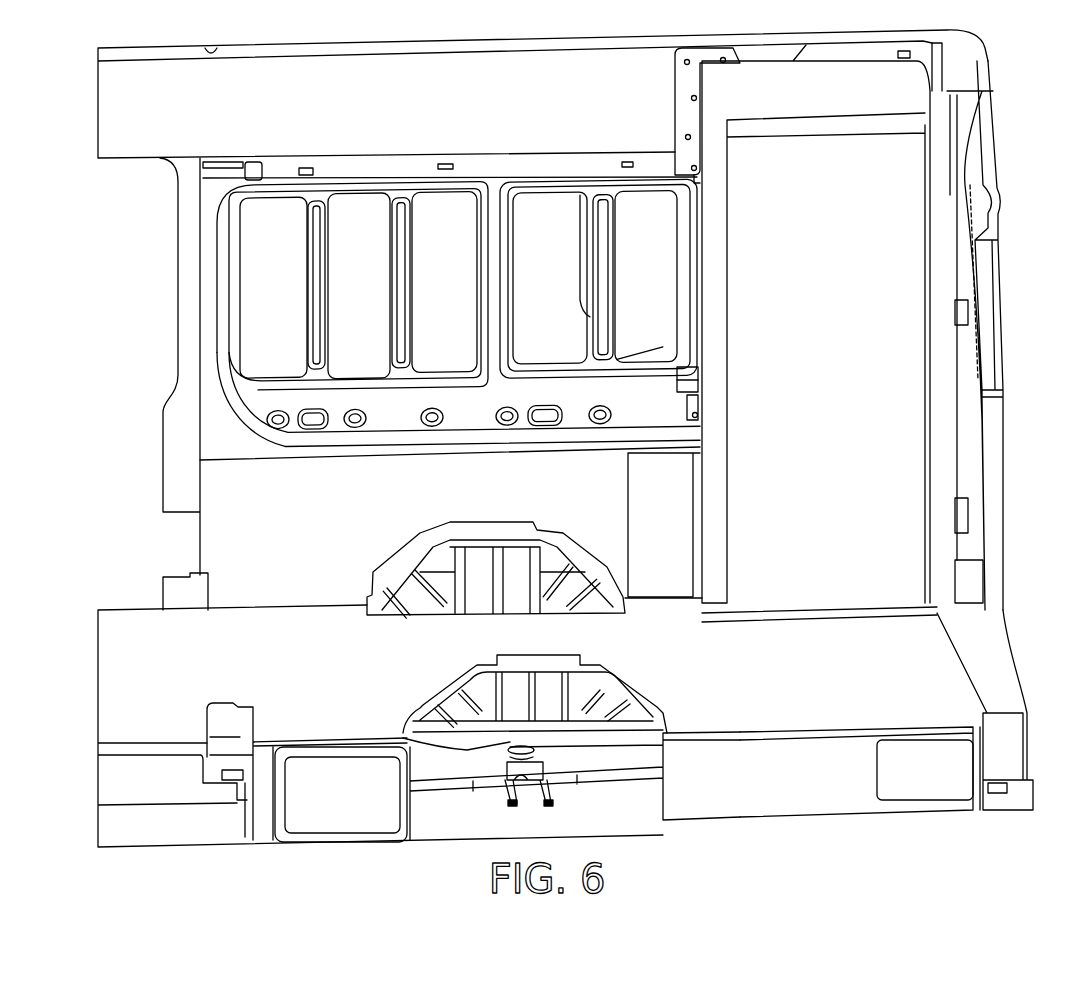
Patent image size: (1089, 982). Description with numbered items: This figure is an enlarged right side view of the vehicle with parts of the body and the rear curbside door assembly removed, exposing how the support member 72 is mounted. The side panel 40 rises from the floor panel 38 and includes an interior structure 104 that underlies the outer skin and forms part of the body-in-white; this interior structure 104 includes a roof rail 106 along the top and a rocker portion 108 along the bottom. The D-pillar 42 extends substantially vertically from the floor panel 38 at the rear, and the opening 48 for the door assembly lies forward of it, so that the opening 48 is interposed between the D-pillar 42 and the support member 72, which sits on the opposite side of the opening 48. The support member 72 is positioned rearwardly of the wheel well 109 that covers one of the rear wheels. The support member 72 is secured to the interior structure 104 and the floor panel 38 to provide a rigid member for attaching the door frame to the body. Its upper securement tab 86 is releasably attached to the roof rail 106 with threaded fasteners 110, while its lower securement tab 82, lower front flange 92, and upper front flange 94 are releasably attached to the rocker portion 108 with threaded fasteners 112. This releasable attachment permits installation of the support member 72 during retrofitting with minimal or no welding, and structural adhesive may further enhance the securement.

The floor panel 38 is at (127, 617).
The side panel 40 is at (178, 230).
The D-pillar 42 is at (985, 480).
The opening 48 is at (823, 160).
The support member 72 is at (693, 615).
The lower securement tab 82 is at (693, 373).
The upper securement tab 86 is at (697, 183).
The lower front flange 92 is at (697, 518).
The upper front flange 94 is at (693, 403).
The interior structure 104 is at (205, 320).
The roof rail 106 is at (383, 167).
The rocker portion 108 is at (300, 438).
The wheel well 109 is at (383, 613).
The threaded fasteners 110 is at (683, 137).
The threaded fasteners 112 is at (690, 413).